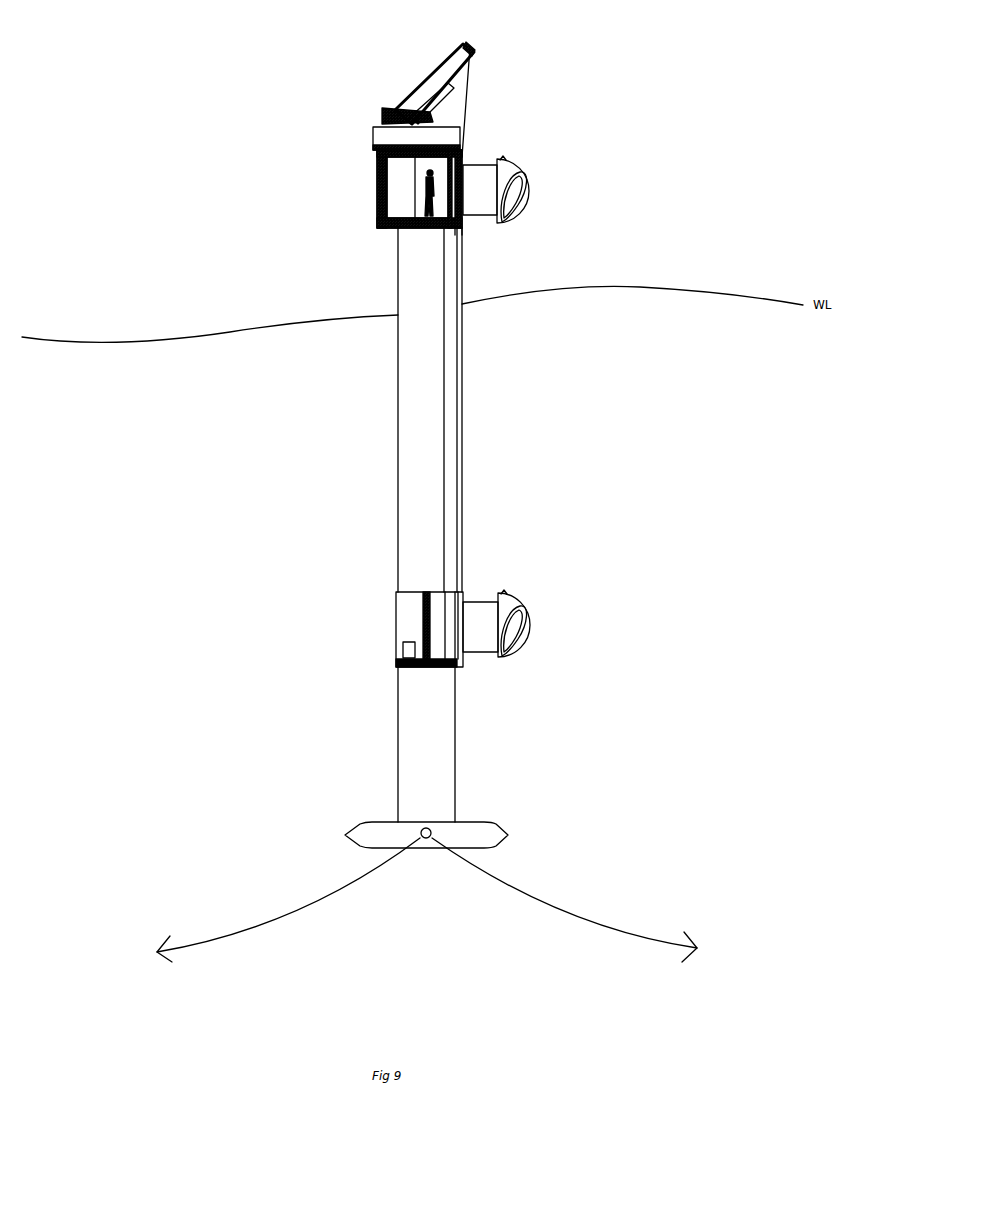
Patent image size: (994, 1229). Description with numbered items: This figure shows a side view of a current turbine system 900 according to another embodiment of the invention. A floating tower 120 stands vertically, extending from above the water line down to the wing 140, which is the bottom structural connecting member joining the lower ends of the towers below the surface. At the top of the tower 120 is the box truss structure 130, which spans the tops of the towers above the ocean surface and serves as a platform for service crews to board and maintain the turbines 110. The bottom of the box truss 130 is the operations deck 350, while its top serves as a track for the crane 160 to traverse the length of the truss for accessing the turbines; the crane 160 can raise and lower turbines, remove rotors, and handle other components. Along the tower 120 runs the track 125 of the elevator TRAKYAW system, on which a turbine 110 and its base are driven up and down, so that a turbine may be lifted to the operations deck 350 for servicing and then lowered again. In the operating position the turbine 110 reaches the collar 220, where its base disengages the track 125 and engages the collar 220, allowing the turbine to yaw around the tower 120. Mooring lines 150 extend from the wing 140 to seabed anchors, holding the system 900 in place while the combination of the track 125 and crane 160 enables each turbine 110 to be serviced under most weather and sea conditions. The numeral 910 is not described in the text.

The current turbine system 900 is at (483, 48).
The crane 160 is at (418, 82).
The operator 910 is at (392, 178).
The box truss structure 130 is at (380, 205).
The turbine 110 is at (535, 200).
The operations deck 350 is at (467, 226).
The track 125 is at (463, 399).
The tower 120 is at (392, 452).
The collar 220 is at (396, 632).
The wing 140 is at (508, 835).
The mooring lines 150 is at (293, 918).